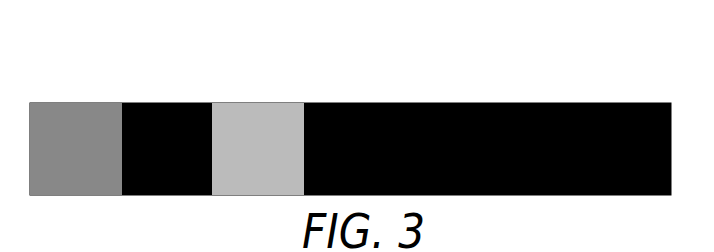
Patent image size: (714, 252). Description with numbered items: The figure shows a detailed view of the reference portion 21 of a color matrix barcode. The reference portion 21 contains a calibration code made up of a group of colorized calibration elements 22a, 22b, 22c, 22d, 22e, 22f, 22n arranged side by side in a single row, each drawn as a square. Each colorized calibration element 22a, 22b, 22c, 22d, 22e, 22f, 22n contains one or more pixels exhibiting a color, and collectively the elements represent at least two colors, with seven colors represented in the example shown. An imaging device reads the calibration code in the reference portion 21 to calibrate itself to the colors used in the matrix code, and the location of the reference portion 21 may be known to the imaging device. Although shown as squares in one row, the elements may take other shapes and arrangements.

The reference portion 21 is at (533, 52).
The colorized calibration element 22a is at (78, 103).
The colorized calibration element 22b is at (168, 103).
The colorized calibration element 22c is at (262, 103).
The colorized calibration element 22d is at (355, 103).
The colorized calibration element 22e is at (440, 103).
The colorized calibration element 22f is at (534, 103).
The colorized calibration element 22n is at (627, 103).